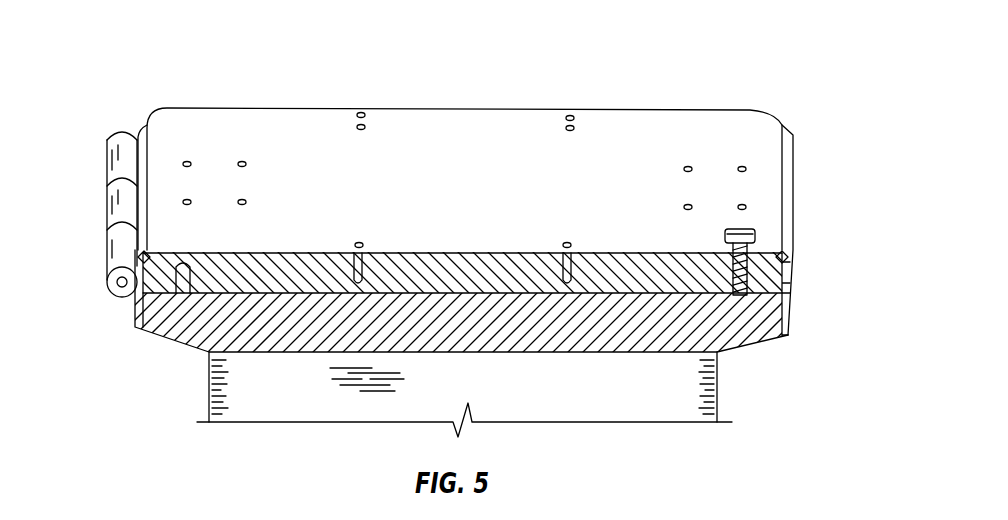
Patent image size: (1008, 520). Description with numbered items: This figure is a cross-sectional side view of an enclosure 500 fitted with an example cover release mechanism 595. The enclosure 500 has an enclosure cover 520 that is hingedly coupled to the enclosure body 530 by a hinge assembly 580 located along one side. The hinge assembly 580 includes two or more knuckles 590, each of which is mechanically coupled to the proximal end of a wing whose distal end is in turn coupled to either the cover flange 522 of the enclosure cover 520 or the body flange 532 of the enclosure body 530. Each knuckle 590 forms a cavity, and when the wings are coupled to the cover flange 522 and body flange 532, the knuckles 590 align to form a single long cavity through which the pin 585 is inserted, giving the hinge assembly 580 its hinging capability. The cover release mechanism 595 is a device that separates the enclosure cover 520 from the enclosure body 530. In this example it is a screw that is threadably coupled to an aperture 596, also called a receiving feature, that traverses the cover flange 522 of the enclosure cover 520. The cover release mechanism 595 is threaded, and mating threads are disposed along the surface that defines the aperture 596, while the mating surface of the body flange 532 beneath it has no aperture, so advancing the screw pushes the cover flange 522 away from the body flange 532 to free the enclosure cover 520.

The enclosure 500 is at (775, 62).
The enclosure cover 520 is at (484, 194).
The cover flange 522 is at (791, 279).
The enclosure body 530 is at (481, 391).
The body flange 532 is at (787, 314).
The hinge assembly 580 is at (90, 236).
The pin 585 is at (120, 291).
The knuckle 590 is at (108, 282).
The cover release mechanism 595 is at (757, 238).
The aperture 596 is at (738, 297).